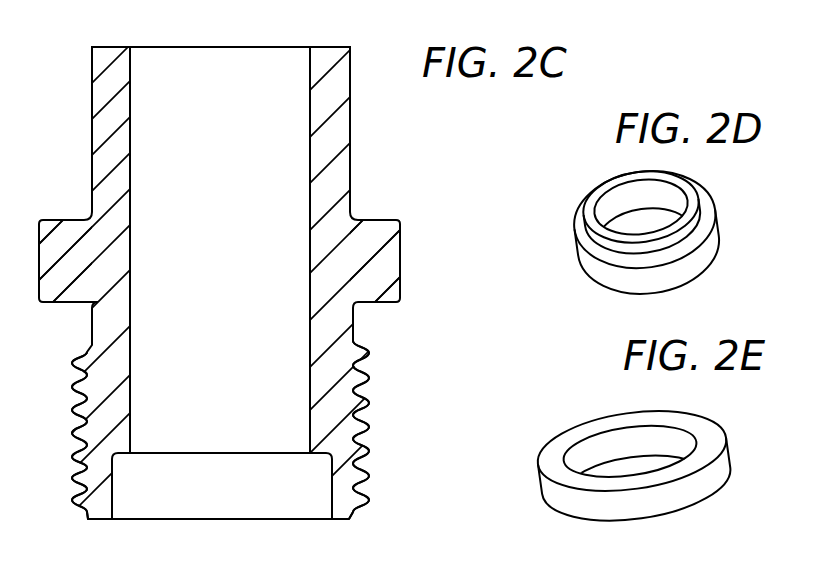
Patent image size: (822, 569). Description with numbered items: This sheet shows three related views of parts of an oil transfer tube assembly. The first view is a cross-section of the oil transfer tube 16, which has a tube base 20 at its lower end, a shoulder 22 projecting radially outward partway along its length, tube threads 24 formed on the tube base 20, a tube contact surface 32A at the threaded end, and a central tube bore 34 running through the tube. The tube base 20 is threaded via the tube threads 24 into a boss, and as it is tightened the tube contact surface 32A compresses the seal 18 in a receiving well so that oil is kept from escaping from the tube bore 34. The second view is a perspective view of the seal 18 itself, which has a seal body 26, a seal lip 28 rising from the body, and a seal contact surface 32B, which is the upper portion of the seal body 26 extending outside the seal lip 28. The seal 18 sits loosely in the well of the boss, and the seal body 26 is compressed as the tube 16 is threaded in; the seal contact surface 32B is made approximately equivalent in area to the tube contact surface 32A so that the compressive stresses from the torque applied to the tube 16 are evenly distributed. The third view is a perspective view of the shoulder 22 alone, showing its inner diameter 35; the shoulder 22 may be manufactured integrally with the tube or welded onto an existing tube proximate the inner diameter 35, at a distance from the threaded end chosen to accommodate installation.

In FIG. 2C, the oil transfer tube 16 is at (352, 86).
In FIG. 2C, the seal 18 is at (700, 0).
In FIG. 2D, the seal 18 is at (642, 218).
In FIG. 2C, the tube base 20 is at (82, 428).
In FIG. 2C, the shoulder 22 is at (387, 253).
In FIG. 2E, the shoulder 22 is at (640, 451).
In FIG. 2C, the tube threads 24 is at (365, 447).
In FIG. 2D, the seal body 26 is at (600, 277).
In FIG. 2D, the seal lip 28 is at (609, 184).
In FIG. 2C, the tube contact surface 32A is at (102, 519).
In FIG. 2D, the seal contact surface 32B is at (707, 228).
In FIG. 2C, the tube bore 34 is at (184, 77).
In FIG. 2E, the inner diameter 35 is at (648, 438).